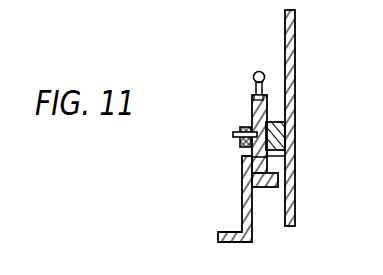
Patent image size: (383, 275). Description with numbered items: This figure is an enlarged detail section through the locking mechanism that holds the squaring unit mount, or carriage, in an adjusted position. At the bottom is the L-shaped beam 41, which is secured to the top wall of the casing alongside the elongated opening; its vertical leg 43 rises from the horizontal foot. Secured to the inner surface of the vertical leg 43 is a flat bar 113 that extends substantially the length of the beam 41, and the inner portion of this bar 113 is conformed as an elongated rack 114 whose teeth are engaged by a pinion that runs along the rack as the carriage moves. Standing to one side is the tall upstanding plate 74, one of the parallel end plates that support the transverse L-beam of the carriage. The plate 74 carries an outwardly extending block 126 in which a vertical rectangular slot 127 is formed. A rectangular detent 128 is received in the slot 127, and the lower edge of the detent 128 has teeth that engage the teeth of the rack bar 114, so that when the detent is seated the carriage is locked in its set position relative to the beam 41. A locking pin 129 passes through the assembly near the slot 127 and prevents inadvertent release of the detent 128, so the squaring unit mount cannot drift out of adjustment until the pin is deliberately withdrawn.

The upstanding plate 74 is at (295, 42).
The block 126 is at (278, 122).
The vertical rectangular slot 127 is at (240, 131).
The locking pin 129 is at (233, 137).
The rectangular detent 128 is at (267, 154).
The vertical leg 43 is at (242, 197).
The elongated rack 114 is at (278, 172).
The flat bar 113 is at (268, 187).
The beam 41 is at (254, 233).